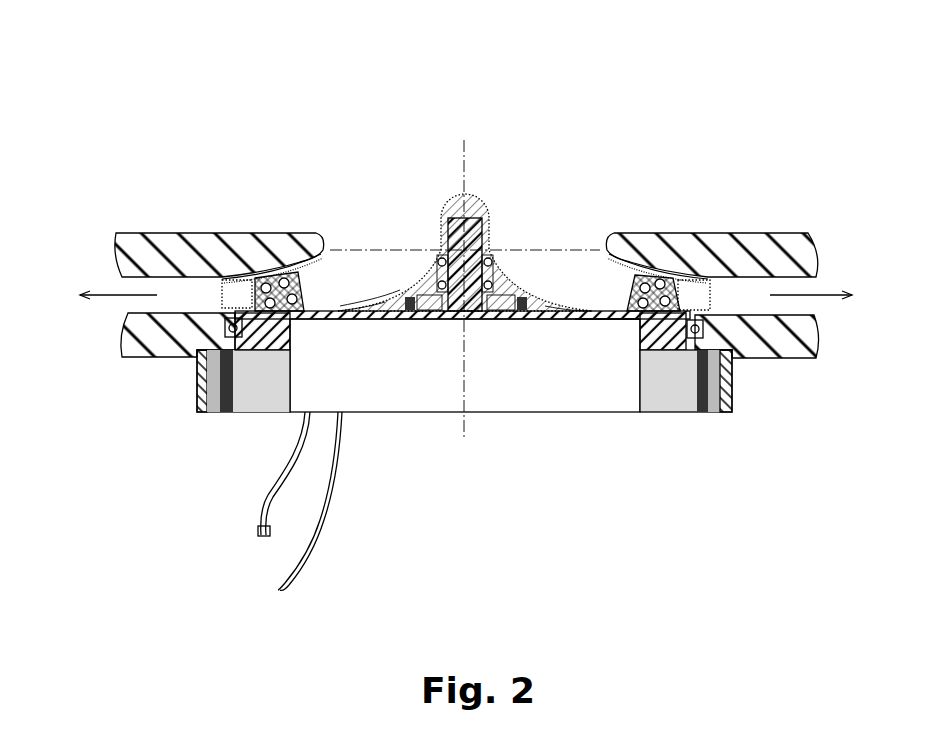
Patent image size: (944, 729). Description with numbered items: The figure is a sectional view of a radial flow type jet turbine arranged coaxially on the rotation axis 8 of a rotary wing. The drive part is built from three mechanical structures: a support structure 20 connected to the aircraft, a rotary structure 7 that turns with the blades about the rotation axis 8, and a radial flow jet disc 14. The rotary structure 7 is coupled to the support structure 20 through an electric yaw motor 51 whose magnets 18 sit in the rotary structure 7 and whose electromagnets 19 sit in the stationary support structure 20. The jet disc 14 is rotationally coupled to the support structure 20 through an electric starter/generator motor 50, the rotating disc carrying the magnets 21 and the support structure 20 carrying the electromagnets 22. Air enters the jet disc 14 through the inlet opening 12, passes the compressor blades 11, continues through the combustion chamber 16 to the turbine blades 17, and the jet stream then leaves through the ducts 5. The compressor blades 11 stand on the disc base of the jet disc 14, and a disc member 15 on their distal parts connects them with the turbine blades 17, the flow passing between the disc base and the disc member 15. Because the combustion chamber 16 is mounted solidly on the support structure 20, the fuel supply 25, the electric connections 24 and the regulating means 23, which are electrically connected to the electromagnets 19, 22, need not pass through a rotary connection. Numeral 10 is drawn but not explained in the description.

The ducts 5 is at (465, 295).
The rotary structure 7 is at (152, 255).
The rotation axis 8 is at (463, 147).
The seal ring 10 is at (233, 327).
The compressor blades 11 is at (344, 275).
The inlet opening 12 is at (392, 248).
The radial flow jet disc 14 is at (502, 277).
The disc member 15 is at (620, 262).
The combustion chamber 16 is at (665, 295).
The turbine blades 17 is at (695, 295).
The magnets 18 is at (715, 378).
The electromagnets 19 is at (658, 378).
The support structure 20 is at (650, 333).
The magnets 21 is at (512, 472).
The electromagnets 22 is at (462, 473).
The regulating means 23 is at (390, 387).
The electric connections 24 is at (322, 540).
The fuel supply 25 is at (263, 538).
The electric starter/generator motor 50 is at (512, 312).
The electric yaw motor 51 is at (700, 398).